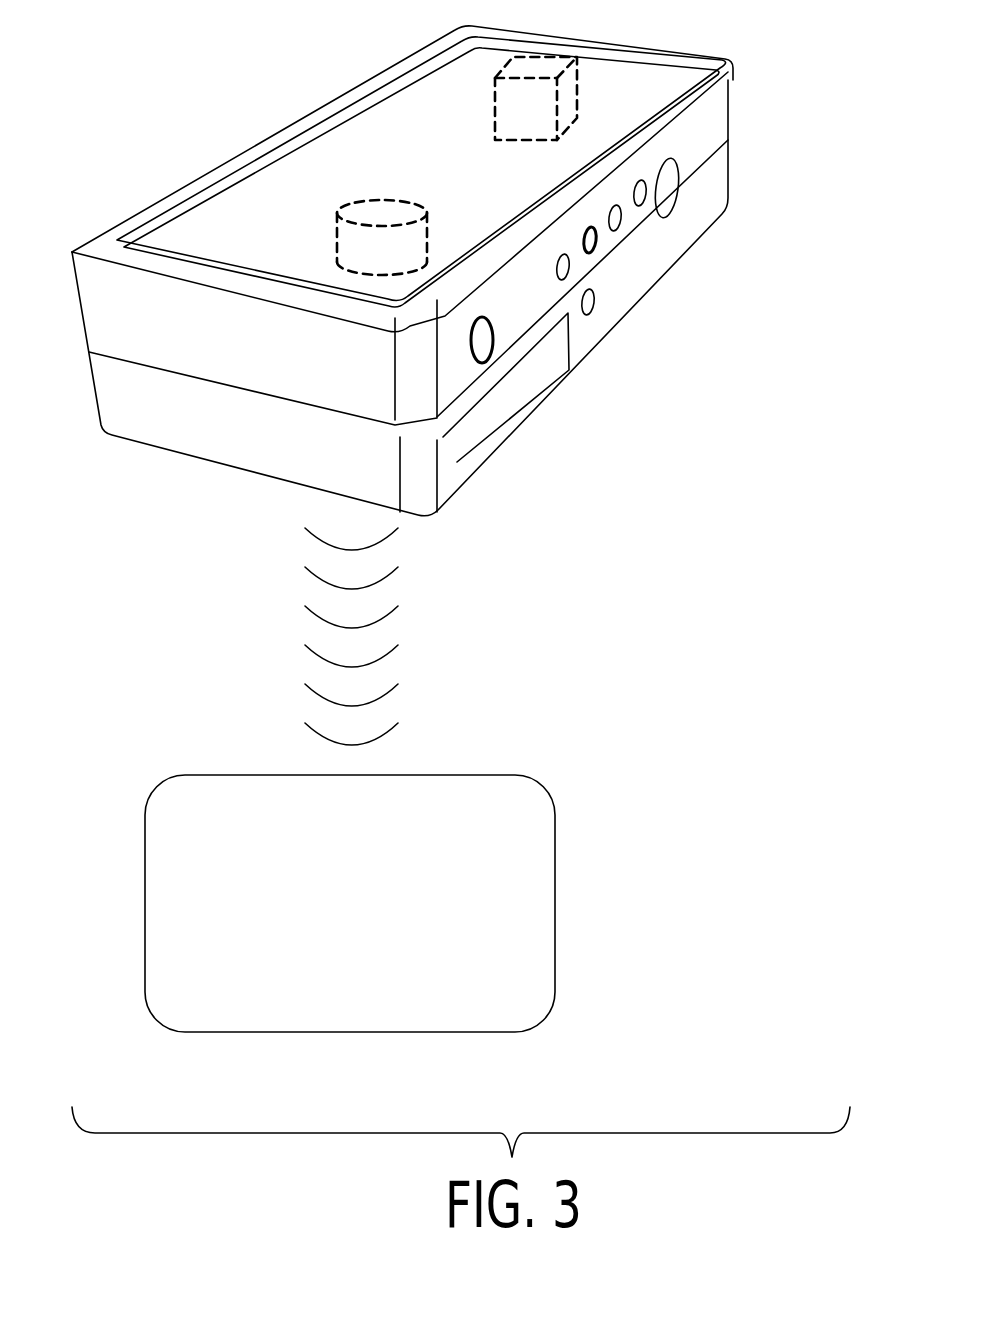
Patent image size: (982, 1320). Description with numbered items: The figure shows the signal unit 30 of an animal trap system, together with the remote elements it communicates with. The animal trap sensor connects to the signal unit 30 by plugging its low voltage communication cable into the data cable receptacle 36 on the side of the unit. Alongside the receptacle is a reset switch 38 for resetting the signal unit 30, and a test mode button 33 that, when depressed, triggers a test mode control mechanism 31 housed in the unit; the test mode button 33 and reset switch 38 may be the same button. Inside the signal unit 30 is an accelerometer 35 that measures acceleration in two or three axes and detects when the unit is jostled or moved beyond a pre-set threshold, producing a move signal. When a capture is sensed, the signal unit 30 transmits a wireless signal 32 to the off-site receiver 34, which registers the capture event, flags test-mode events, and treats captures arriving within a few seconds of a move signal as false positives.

The signal unit 30 is at (385, 176).
The test mode control mechanism 31 is at (337, 233).
The signal 32 is at (278, 621).
The test mode button 33 is at (480, 338).
The off-site receiver 34 is at (367, 925).
The accelerometer 35 is at (493, 97).
The data cable receptacle 36 is at (592, 253).
The reset switch 38 is at (668, 186).